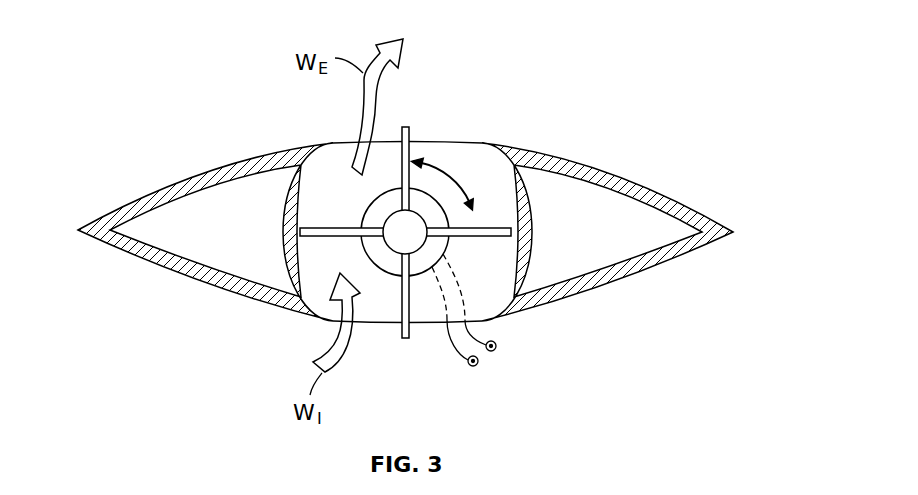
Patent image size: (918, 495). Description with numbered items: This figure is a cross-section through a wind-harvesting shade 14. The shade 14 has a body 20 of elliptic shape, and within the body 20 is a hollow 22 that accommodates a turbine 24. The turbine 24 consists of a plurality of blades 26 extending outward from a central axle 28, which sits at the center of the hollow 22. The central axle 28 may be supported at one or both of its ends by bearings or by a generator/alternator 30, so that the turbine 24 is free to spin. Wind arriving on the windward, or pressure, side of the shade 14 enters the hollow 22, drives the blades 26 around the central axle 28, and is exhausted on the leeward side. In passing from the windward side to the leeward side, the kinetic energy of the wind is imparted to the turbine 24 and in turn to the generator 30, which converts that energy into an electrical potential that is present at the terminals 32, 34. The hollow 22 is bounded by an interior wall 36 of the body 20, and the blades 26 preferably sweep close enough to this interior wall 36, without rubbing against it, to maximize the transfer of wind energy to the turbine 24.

The shade 14 is at (655, 78).
The body 20 is at (622, 278).
The hollow 22 is at (458, 169).
The turbine 24 is at (406, 345).
The blades 26 is at (405, 127).
The central axle 28 is at (394, 243).
The generator/alternator 30 is at (392, 262).
The terminal 32 is at (480, 365).
The terminal 34 is at (497, 350).
The interior wall 36 is at (303, 215).